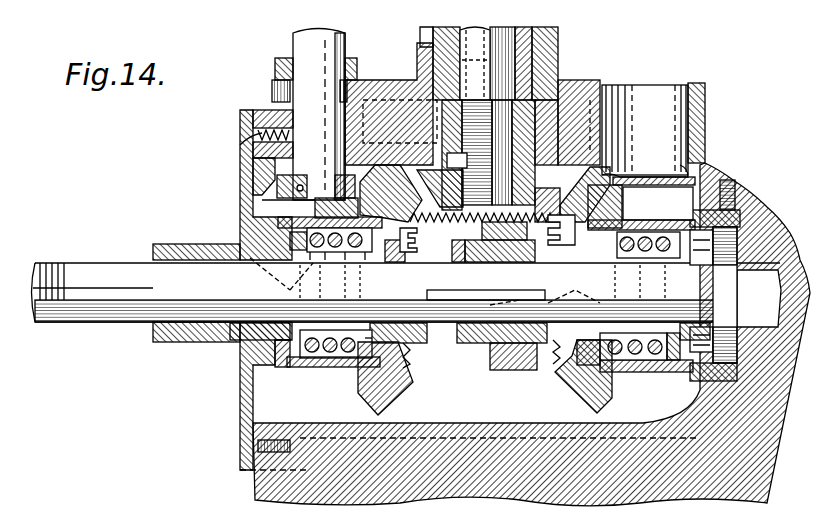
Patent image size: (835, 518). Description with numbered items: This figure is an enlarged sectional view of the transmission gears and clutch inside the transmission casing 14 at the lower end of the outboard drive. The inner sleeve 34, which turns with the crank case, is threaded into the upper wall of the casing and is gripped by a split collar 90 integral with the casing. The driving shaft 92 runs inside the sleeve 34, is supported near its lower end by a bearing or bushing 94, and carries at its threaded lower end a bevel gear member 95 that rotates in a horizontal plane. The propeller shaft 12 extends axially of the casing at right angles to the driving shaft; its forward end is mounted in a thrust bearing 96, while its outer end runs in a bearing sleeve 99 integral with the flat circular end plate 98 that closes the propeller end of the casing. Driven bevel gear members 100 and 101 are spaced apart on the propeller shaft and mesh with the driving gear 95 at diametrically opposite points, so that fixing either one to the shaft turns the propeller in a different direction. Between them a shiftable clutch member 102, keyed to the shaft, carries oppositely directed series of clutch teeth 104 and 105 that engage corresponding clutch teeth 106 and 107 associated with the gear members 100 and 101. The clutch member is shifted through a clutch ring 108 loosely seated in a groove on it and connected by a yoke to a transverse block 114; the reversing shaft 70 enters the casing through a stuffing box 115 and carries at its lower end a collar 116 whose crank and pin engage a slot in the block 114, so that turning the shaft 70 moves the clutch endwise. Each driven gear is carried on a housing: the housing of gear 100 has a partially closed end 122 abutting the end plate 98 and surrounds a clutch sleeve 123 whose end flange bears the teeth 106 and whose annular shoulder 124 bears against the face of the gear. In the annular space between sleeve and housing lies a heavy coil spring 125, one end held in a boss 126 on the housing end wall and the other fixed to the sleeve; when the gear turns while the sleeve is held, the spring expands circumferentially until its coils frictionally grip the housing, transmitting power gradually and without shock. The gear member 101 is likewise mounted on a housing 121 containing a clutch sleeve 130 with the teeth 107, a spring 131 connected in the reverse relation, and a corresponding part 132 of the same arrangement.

The propeller shaft 12 is at (407, 295).
The housing body 14 is at (478, 477).
The inner sleeve 34 is at (557, 62).
The reversing shaft 70 is at (305, 42).
The split collar 90 is at (568, 37).
The driving shaft 92 is at (476, 35).
The bearing or bushing 94 is at (520, 25).
The bevel gear member 95 is at (493, 73).
The thrust bearing 96 is at (740, 217).
The end plate 98 is at (240, 193).
The bearing sleeve 99 is at (153, 248).
The bevel gear member 100 is at (392, 388).
The bevel gear member 101 is at (577, 392).
The shiftable clutch member 102 is at (541, 358).
The clutch teeth 104 is at (460, 325).
The clutch teeth 105 is at (553, 350).
The clutch teeth 106 is at (480, 237).
The clutch teeth 107 is at (551, 287).
The clutch ring 108 is at (497, 372).
The block 114 is at (273, 212).
The stuffing box 115 is at (276, 68).
The collar 116 is at (290, 185).
The housing 121 is at (645, 372).
The partially closed end 122 is at (278, 332).
The clutch sleeve 123 is at (281, 281).
The annular shoulder 124 is at (378, 264).
The coil spring 125 is at (342, 354).
The boss 126 is at (306, 367).
The clutch sleeve 130 is at (672, 322).
The spring 131 is at (668, 236).
The cylinder 132 is at (647, 178).